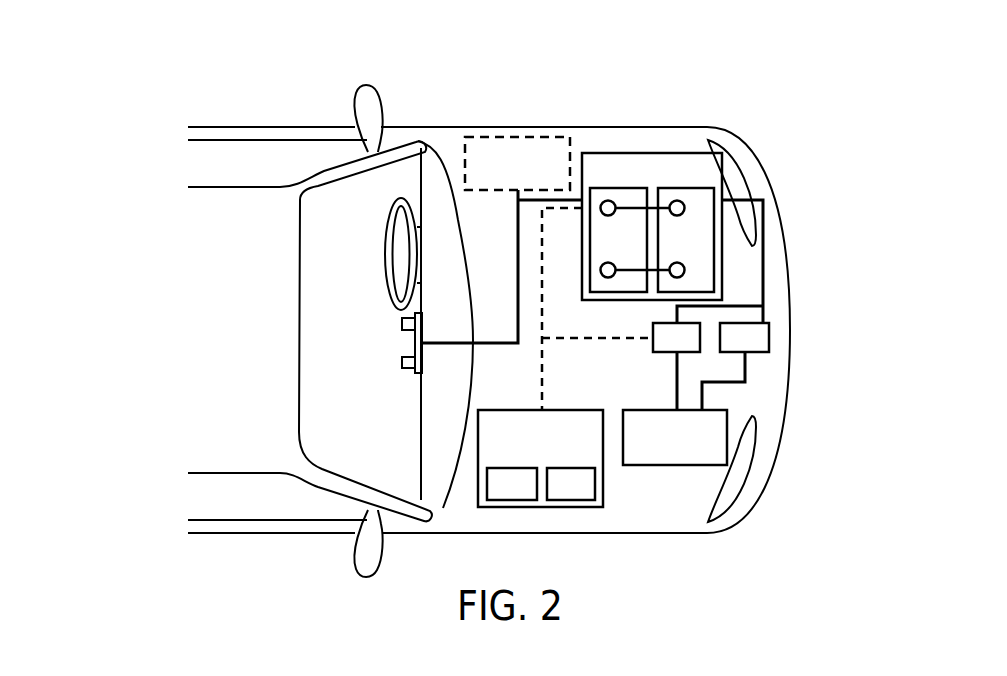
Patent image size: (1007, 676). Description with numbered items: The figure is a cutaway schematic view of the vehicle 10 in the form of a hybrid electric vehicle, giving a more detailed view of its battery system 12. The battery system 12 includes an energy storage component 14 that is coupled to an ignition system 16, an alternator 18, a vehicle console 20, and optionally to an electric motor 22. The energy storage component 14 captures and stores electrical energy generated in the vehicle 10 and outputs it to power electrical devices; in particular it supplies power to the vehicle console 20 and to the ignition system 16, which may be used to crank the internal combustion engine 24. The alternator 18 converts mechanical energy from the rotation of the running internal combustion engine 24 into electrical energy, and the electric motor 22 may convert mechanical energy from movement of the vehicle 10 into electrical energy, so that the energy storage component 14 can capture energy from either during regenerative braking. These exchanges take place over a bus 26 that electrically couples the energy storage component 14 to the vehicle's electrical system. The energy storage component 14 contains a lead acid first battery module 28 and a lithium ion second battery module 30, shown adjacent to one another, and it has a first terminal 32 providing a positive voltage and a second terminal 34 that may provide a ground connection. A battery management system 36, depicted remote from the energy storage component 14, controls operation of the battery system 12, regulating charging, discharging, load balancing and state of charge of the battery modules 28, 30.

The vehicle 10 is at (495, 80).
The battery system 12 is at (718, 90).
The energy storage component 14 is at (652, 153).
The ignition system 16 is at (769, 340).
The alternator 18 is at (665, 353).
The vehicle console 20 is at (396, 342).
The electric motor 22 is at (521, 137).
The internal combustion engine 24 is at (650, 410).
The bus 26 is at (518, 267).
The first battery module 28 is at (632, 250).
The second battery module 30 is at (700, 250).
The first terminal 32 is at (510, 410).
The second terminal 34 is at (510, 502).
The battery management system 36 is at (573, 502).